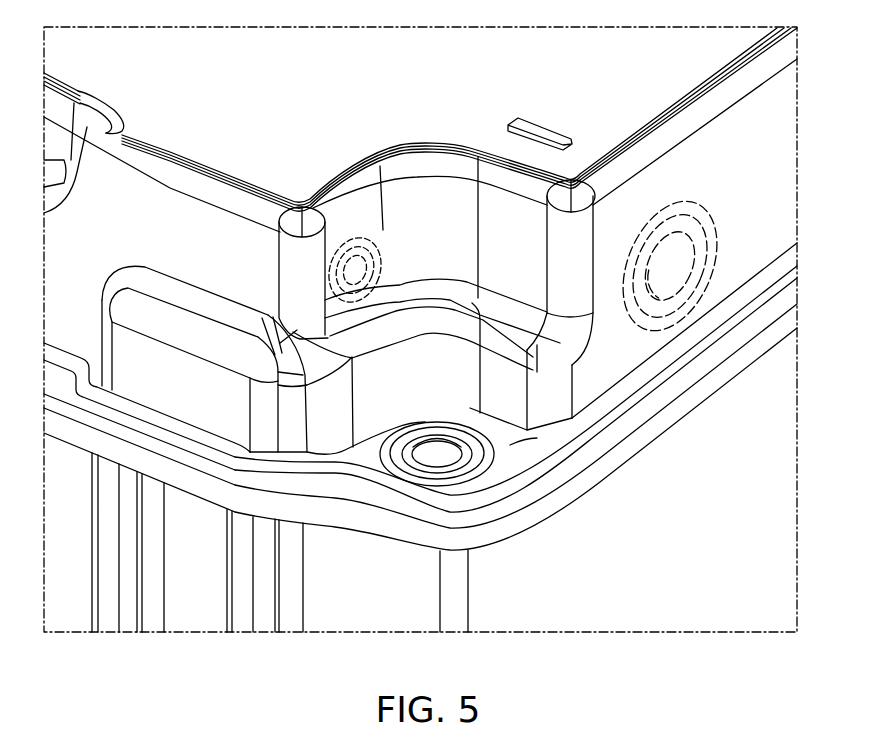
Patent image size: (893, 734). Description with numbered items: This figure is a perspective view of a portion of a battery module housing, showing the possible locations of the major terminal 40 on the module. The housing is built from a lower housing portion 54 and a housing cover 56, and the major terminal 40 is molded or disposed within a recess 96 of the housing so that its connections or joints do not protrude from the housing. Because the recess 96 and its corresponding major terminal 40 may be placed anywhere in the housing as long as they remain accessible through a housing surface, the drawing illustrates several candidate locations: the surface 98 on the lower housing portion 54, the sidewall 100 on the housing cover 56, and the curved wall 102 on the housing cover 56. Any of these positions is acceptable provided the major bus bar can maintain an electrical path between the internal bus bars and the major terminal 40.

The major terminal 40 is at (443, 413).
The lower housing portion 54 is at (727, 512).
The housing cover 56 is at (715, 192).
The recess 96 is at (413, 441).
The surface 98 is at (510, 446).
The sidewall 100 is at (758, 226).
The curved wall 102 is at (505, 225).